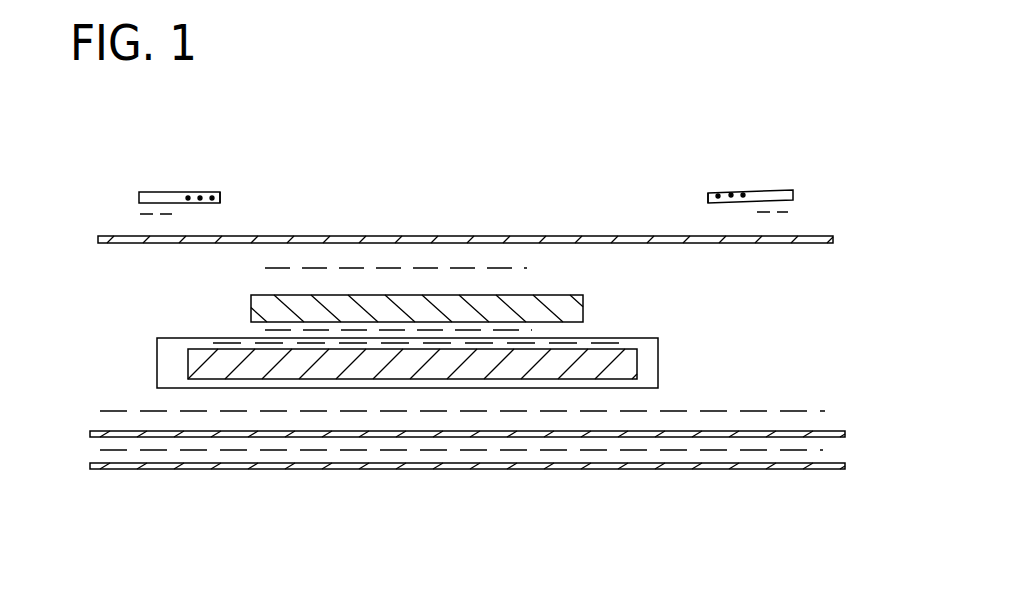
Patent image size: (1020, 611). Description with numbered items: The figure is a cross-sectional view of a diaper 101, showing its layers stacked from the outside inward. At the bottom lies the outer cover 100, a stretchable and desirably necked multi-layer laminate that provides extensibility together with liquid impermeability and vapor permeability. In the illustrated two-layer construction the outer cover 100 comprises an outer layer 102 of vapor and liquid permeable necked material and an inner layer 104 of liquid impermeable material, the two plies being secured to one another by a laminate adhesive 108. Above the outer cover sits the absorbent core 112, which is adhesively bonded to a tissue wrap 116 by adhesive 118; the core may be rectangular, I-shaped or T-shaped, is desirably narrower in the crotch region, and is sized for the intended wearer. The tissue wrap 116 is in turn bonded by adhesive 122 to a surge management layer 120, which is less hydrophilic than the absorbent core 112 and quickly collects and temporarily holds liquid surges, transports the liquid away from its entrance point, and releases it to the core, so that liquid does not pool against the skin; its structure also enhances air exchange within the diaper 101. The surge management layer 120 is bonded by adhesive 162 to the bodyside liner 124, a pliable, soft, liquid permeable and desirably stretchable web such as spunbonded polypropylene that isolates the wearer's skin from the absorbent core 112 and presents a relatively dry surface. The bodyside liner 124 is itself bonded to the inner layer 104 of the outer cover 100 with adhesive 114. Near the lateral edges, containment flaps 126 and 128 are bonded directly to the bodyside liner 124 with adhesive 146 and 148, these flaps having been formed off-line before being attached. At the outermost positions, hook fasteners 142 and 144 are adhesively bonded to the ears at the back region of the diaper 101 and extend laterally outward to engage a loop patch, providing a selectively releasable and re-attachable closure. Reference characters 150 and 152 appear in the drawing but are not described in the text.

The outer cover 100 is at (86, 453).
The diaper 101 is at (396, 158).
The outer layer 102 is at (221, 470).
The inner layer 104 is at (97, 431).
The laminate adhesive 108 is at (830, 448).
The absorbent core 112 is at (185, 365).
The adhesive 114 is at (810, 408).
The tissue wrap 116 is at (658, 360).
The adhesive 118 is at (600, 341).
The surge management layer 120 is at (584, 300).
The adhesive 122 is at (540, 330).
The bodyside liner 124 is at (835, 236).
The containment flap 126 is at (795, 194).
The containment flap 128 is at (139, 196).
The hook fastener 142 is at (226, 196).
The hook fastener 144 is at (698, 197).
The adhesive 146 is at (788, 212).
The adhesive 148 is at (172, 214).
The left contacts 150 is at (200, 196).
The right contacts 152 is at (733, 195).
The adhesive 162 is at (540, 268).